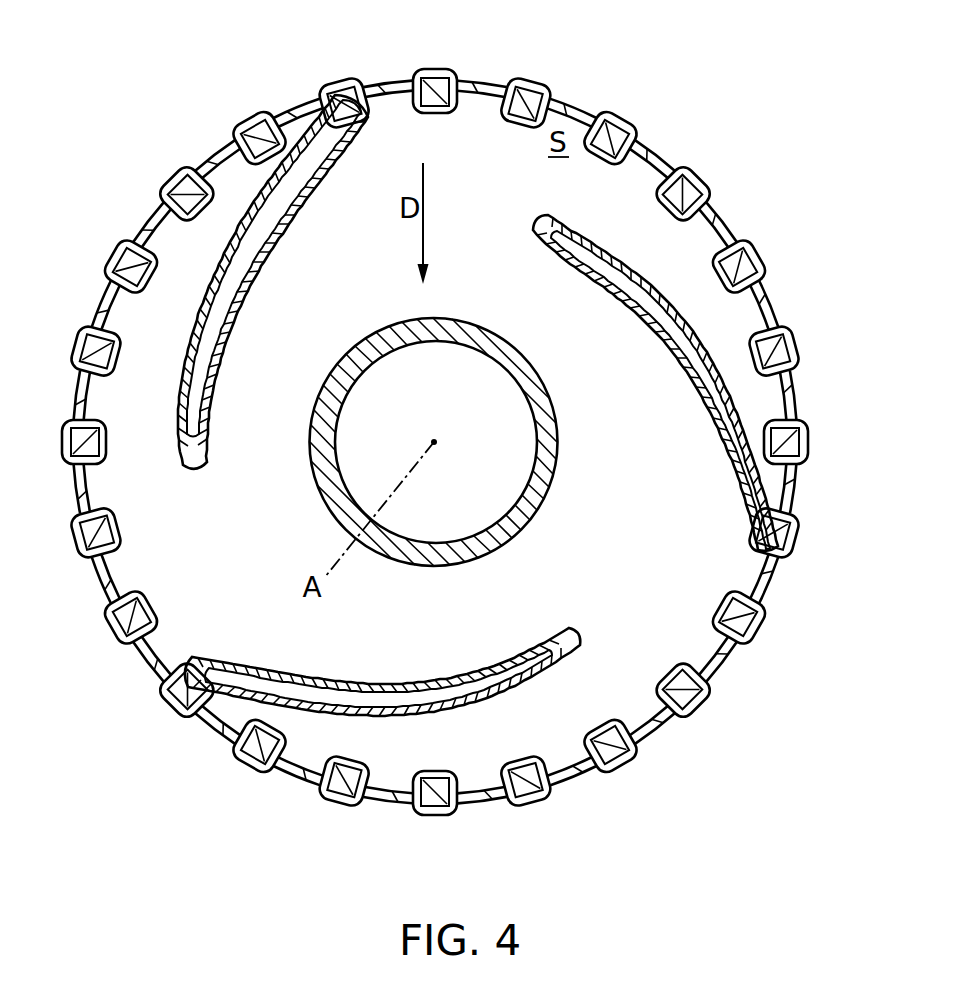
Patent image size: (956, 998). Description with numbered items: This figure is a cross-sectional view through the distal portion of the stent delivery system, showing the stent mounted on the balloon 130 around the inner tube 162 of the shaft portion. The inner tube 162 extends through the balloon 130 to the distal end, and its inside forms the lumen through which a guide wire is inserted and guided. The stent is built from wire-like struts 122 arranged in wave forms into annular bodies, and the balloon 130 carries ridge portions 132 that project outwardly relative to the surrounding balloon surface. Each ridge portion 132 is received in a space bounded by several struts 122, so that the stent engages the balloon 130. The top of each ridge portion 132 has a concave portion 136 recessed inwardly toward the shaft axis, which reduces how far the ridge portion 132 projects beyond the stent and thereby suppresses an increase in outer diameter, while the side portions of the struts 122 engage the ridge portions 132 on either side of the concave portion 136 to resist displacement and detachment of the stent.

The strut 122 is at (441, 86).
The ridge portion 132 is at (548, 92).
The concave portion 136 is at (567, 117).
The balloon 130 is at (264, 251).
The inner tube 162 is at (534, 518).